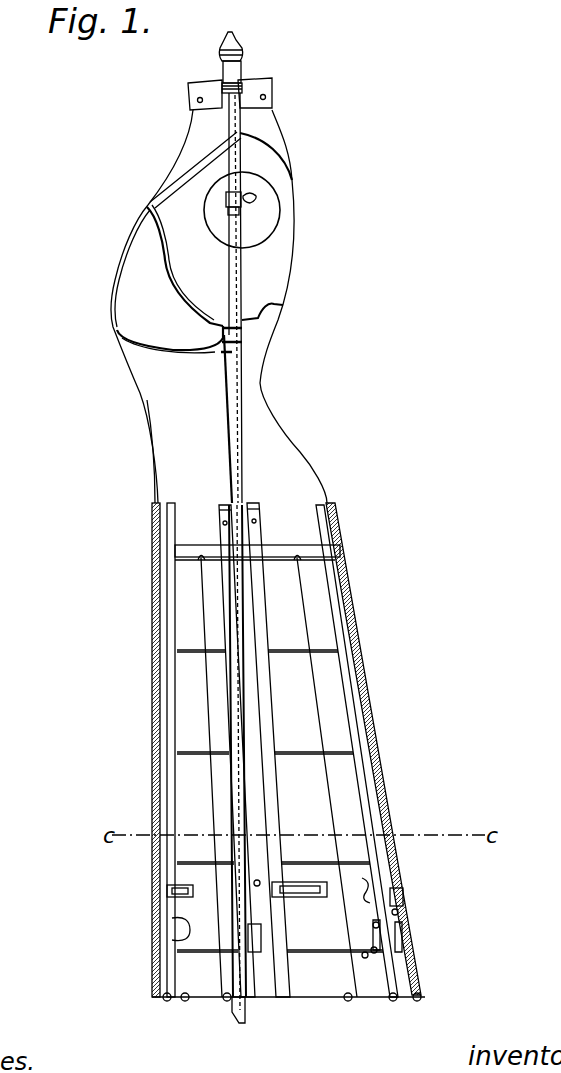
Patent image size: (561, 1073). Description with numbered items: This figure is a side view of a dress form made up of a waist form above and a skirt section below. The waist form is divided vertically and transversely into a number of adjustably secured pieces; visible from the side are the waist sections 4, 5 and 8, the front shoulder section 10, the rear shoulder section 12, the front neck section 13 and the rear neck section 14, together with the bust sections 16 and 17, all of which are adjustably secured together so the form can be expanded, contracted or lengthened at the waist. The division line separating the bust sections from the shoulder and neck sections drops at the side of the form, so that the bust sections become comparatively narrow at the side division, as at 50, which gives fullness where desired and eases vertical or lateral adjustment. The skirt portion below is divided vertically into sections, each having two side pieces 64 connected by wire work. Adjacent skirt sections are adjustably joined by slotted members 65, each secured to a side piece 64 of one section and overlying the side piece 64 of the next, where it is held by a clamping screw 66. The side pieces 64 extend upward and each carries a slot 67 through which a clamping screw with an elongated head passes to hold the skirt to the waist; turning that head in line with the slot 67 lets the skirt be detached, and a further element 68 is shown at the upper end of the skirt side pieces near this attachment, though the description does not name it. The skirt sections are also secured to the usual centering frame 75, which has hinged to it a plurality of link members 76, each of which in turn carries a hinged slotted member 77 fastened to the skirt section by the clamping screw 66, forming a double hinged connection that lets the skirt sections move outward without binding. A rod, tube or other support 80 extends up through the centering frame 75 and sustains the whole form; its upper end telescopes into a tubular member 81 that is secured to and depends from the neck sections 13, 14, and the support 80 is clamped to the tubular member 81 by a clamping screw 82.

The waist section 4 is at (153, 485).
The waist section 5 is at (173, 417).
The waist section 8 is at (260, 383).
The front shoulder section 10 is at (208, 288).
The rear shoulder section 12 is at (280, 263).
The front neck section 13 is at (193, 137).
The rear neck section 14 is at (276, 127).
The bust section 16 is at (137, 228).
The bust section 17 is at (118, 312).
The narrow side portion of bust section 50 is at (242, 340).
The side piece 64 is at (257, 540).
The slotted member 65 is at (313, 875).
The clamping screw 66 is at (308, 912).
The slot 67 is at (262, 522).
The post 68 is at (253, 503).
The centering frame 75 is at (328, 978).
The link member 76 is at (385, 944).
The slotted member 77 is at (272, 885).
The rod or tube support 80 is at (243, 225).
The tubular member 81 is at (233, 175).
The clamping screw 82 is at (208, 199).